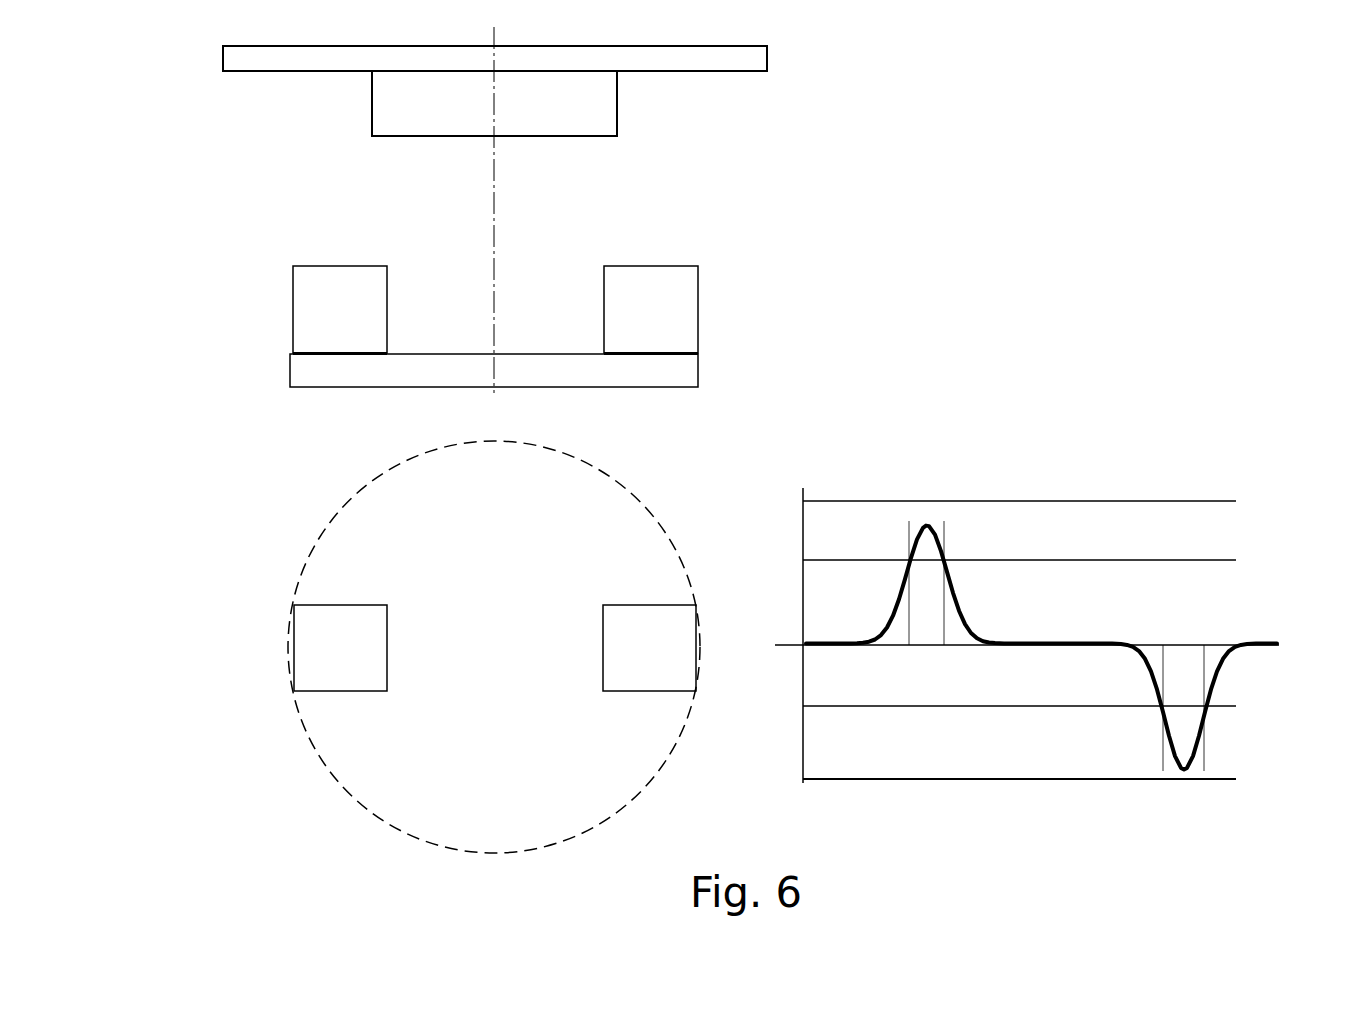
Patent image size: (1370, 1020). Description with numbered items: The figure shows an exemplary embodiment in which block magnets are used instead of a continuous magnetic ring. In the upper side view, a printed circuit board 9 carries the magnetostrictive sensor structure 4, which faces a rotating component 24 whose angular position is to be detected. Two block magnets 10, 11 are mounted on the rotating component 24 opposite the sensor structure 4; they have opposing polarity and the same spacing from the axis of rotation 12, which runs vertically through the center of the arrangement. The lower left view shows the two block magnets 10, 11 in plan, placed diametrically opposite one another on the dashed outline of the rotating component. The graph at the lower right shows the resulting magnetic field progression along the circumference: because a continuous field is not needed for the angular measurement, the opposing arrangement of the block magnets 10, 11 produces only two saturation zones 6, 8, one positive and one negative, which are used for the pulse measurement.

The printed circuit board 9 is at (769, 55).
The magnetostrictive sensor structure 4 is at (592, 105).
The axis of rotation 12 is at (495, 202).
The block magnet 10 is at (293, 305).
The block magnet 11 is at (656, 352).
The rotating component 24 is at (697, 379).
The saturation zone 6 is at (1079, 521).
The saturation zone 8 is at (1232, 744).